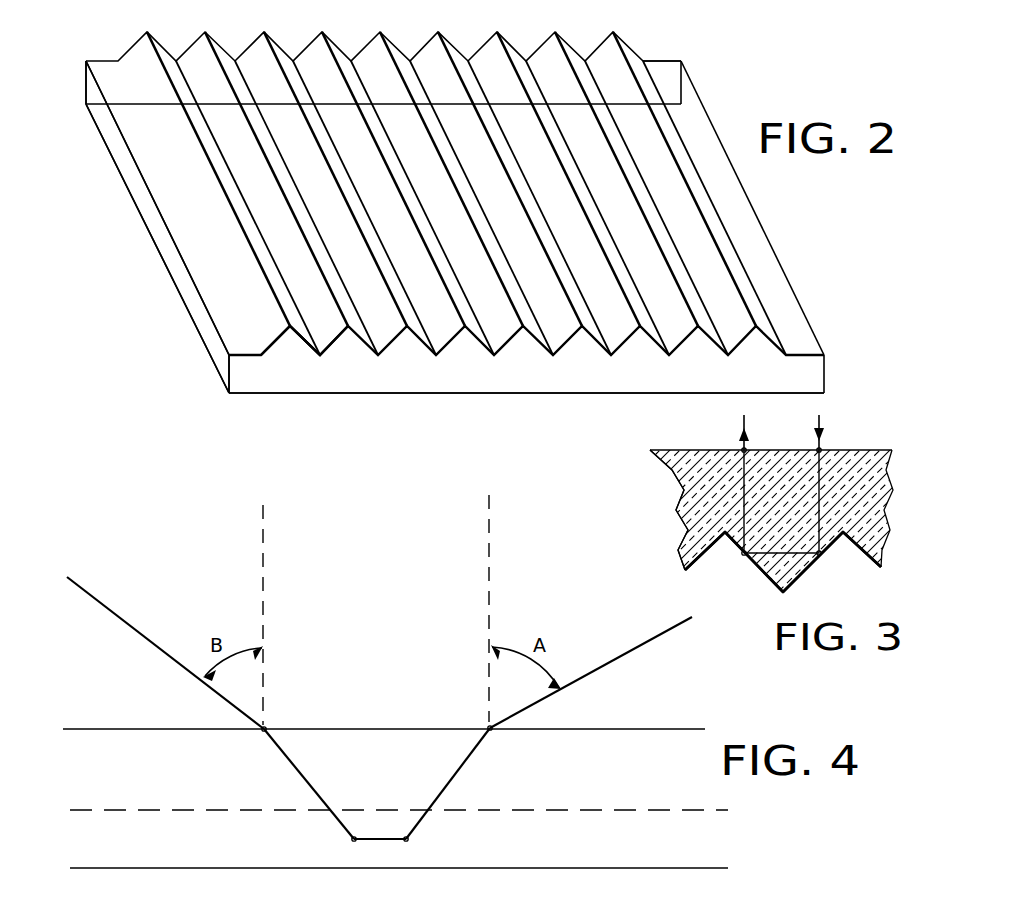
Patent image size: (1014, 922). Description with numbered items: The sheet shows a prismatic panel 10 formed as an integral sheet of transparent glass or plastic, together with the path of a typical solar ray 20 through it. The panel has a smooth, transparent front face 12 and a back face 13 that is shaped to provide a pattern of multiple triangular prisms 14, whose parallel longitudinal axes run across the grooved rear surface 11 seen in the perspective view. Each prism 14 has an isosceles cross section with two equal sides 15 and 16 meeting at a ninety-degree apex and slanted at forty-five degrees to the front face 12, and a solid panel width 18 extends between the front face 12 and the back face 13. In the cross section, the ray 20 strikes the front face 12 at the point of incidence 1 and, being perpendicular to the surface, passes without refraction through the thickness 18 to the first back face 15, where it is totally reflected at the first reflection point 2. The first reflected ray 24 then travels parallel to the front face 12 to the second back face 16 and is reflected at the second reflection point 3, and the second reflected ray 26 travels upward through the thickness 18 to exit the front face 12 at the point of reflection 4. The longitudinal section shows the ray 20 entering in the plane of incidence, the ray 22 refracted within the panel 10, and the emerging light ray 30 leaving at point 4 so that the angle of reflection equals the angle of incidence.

In FIG. 2, the prismatic panel 10 is at (796, 246).
In FIG. 3, the prismatic panel 10 is at (896, 472).
In FIG. 2, the grooved top surface 11 is at (455, 177).
In FIG. 2, the front face 12 is at (421, 394).
In FIG. 3, the front face 12 is at (870, 450).
In FIG. 4, the front face 12 is at (372, 728).
In FIG. 2, the back face 13 is at (667, 59).
In FIG. 4, the back face 13 is at (178, 868).
In FIG. 3, the triangular prism 14 is at (764, 588).
In FIG. 2, the first back face 15 is at (285, 384).
In FIG. 3, the first back face 15 is at (838, 546).
In FIG. 2, the second back face 16 is at (313, 359).
In FIG. 3, the second back face 16 is at (718, 547).
In FIG. 2, the panel width 18 is at (228, 376).
In FIG. 3, the panel width 18 is at (667, 528).
In FIG. 3, the solar ray 20 is at (822, 423).
In FIG. 4, the solar ray 20 is at (618, 655).
In FIG. 3, the refracted ray inside body 22 is at (821, 505).
In FIG. 4, the refracted ray inside body 22 is at (465, 767).
In FIG. 3, the first reflected ray 24 is at (791, 554).
In FIG. 4, the first reflected ray 24 is at (377, 838).
In FIG. 3, the second reflected ray 26 is at (752, 470).
In FIG. 4, the second reflected ray 26 is at (282, 753).
In FIG. 3, the emerging light ray 30 is at (742, 419).
In FIG. 4, the emerging light ray 30 is at (147, 638).
In FIG. 3, the point of incidence 1 is at (829, 439).
In FIG. 4, the point of incidence 1 is at (483, 715).
In FIG. 3, the first reflection point 2 is at (827, 562).
In FIG. 4, the first reflection point 2 is at (407, 851).
In FIG. 3, the second reflection point 3 is at (737, 562).
In FIG. 4, the second reflection point 3 is at (353, 851).
In FIG. 3, the point of reflection 4 is at (731, 439).
In FIG. 4, the point of reflection 4 is at (272, 716).